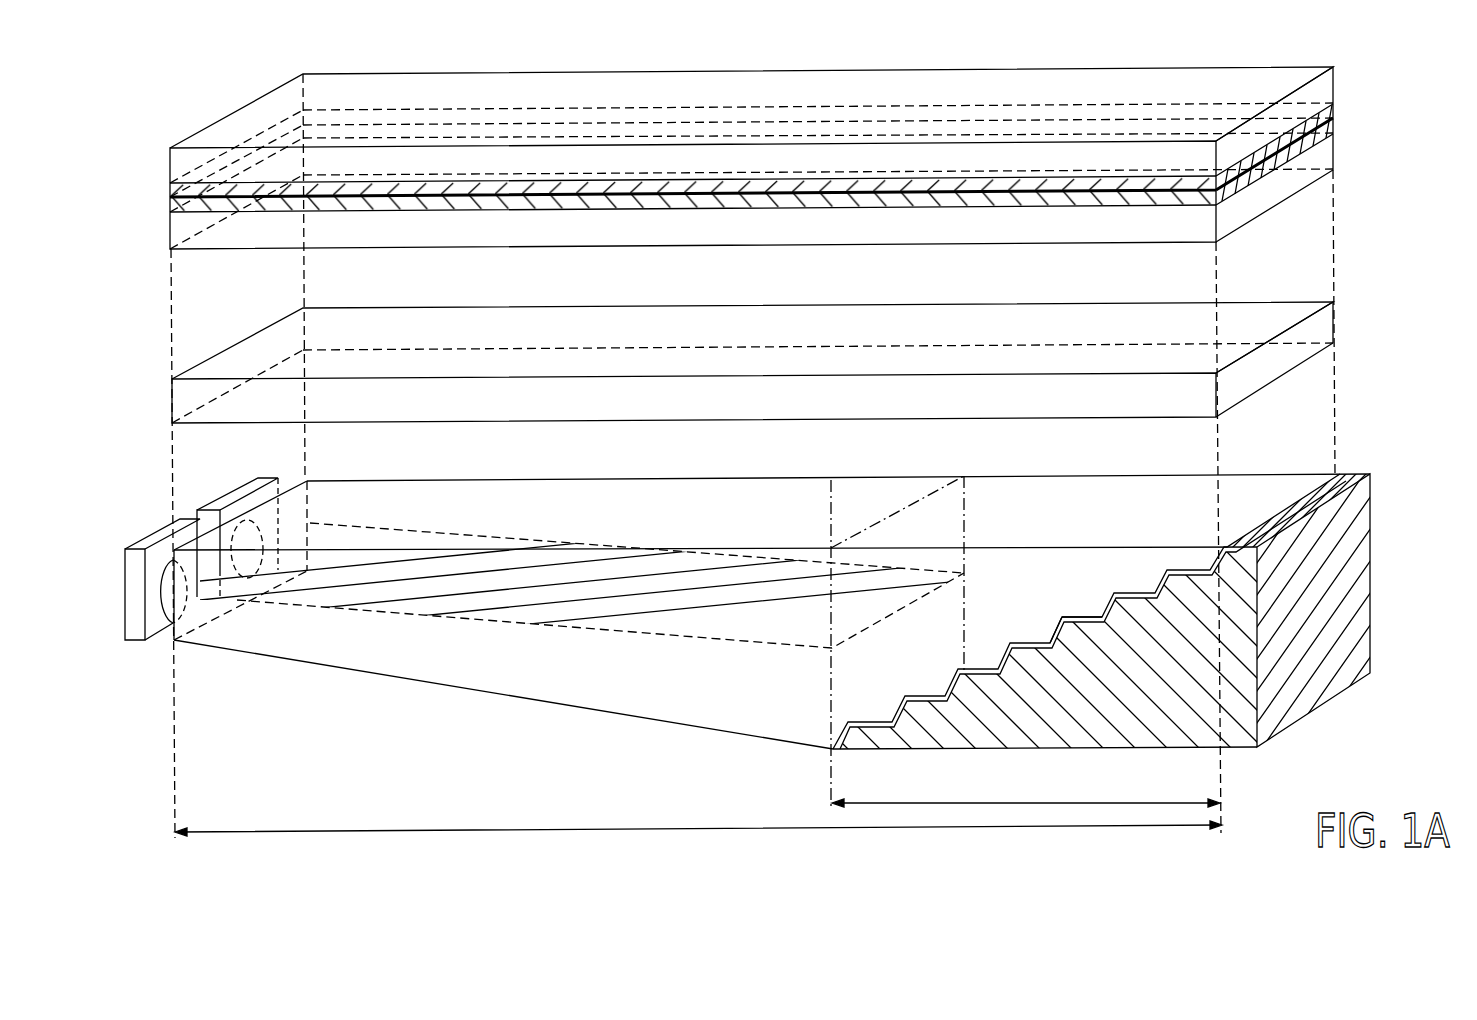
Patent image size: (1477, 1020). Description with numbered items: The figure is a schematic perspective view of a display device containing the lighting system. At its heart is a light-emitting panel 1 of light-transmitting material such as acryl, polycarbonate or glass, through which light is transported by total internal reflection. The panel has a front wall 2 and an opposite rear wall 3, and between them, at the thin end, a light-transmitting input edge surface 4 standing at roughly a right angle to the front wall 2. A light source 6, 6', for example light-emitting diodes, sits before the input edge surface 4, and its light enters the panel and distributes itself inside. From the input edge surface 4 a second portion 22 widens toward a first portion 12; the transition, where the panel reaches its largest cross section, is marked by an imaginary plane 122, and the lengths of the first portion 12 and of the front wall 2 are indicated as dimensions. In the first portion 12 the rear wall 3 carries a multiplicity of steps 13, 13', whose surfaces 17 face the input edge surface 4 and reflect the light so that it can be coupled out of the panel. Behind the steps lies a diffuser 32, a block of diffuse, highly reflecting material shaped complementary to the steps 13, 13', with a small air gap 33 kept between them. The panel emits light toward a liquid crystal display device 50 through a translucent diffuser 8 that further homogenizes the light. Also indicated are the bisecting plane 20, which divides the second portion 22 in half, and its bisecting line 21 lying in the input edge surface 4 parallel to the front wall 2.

The liquid crystal display device 50 is at (252, 117).
The translucent diffuser 8 is at (1322, 326).
The air gap 33 is at (1347, 468).
The input edge surface 4 is at (293, 493).
The second portion 22 is at (578, 516).
The front wall 2 is at (727, 500).
The imaginary plane 122 is at (921, 497).
The first portion 12 is at (1110, 513).
The step 13 is at (1086, 611).
The step 13' is at (1071, 578).
The surface of the steps 17 is at (1162, 578).
The light source 6' is at (204, 537).
The light source 6 is at (145, 579).
The bisecting line 21 is at (224, 612).
The bisecting plane 20 is at (452, 608).
The rear wall 3 is at (642, 680).
The light-emitting panel 1 is at (332, 717).
The diffuser 32 is at (1313, 702).